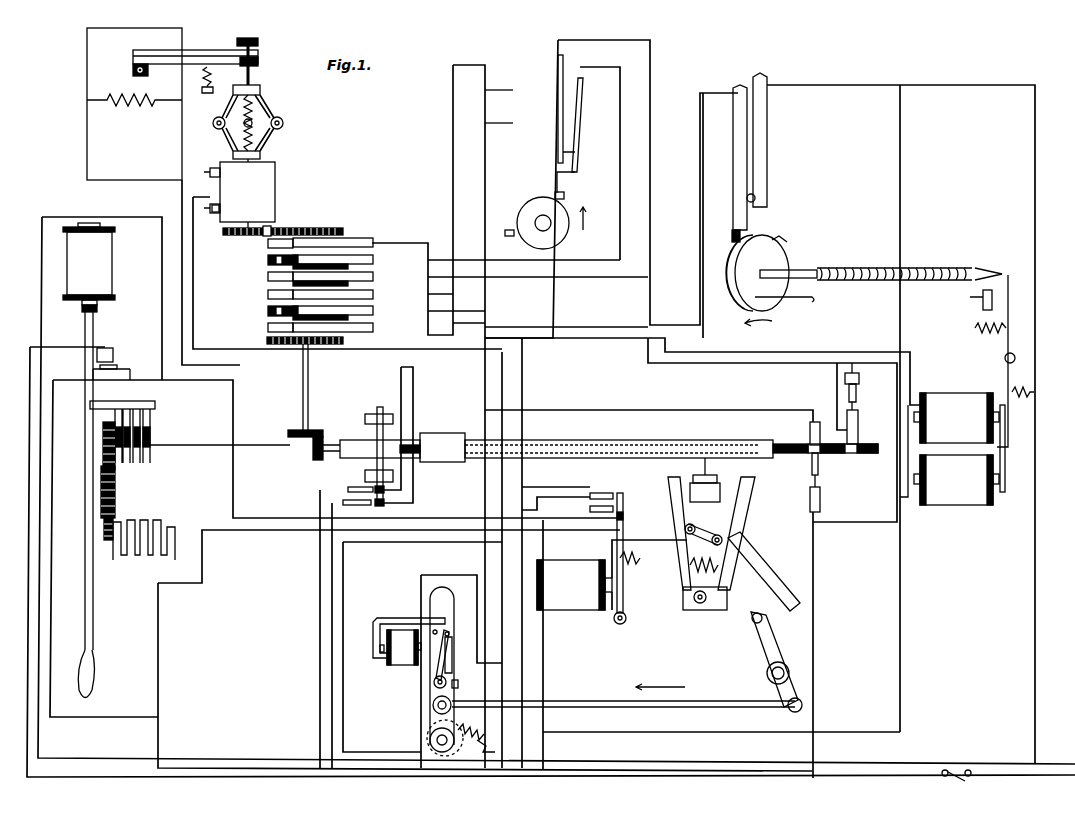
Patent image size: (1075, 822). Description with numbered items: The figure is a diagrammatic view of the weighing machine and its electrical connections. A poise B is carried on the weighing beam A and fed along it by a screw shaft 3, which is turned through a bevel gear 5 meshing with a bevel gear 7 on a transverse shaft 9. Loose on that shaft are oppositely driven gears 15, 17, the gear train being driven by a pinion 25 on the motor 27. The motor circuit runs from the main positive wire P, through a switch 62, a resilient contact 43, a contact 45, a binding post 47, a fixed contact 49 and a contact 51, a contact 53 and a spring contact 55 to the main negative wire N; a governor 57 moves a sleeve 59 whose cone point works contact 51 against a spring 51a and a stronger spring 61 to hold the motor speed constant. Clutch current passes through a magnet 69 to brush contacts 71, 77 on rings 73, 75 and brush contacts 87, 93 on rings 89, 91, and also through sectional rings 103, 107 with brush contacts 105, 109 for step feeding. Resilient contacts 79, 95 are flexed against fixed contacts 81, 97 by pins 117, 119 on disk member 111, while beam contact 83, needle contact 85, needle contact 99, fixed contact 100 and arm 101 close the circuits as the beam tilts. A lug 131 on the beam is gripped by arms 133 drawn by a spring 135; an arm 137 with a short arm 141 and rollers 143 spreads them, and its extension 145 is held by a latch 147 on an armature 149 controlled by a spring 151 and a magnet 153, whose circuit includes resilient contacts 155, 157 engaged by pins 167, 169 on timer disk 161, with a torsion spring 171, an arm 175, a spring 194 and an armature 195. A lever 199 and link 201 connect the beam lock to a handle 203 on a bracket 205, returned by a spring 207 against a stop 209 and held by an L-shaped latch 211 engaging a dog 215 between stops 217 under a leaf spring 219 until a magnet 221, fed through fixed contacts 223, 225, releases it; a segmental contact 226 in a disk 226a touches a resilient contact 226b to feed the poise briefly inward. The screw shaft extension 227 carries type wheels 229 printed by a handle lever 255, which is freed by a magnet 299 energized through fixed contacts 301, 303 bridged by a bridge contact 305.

The screw shaft 3 is at (347, 447).
The bevel gear 5 is at (327, 445).
The bevel gear 7 is at (289, 433).
The shaft 9 is at (309, 386).
The gear 15 is at (322, 228).
The gear 17 is at (344, 344).
The pinion 25 is at (212, 244).
The motor 27 is at (275, 198).
The resilient contact 43 is at (348, 489).
The contact 45 is at (375, 488).
The binding post 47 is at (210, 210).
The fixed contact 49 is at (212, 50).
The contact 51 is at (207, 63).
The spring 51a is at (209, 79).
The contact 53 is at (384, 503).
The spring contact 55 is at (343, 503).
The governor 57 is at (263, 99).
The sleeve 59 is at (281, 135).
The spring 61 is at (268, 112).
The switch 62 is at (957, 766).
The magnet 69 is at (957, 495).
The brush contact 71 is at (346, 241).
The contact ring 73 is at (268, 245).
The contact ring 75 is at (268, 279).
The brush contact 77 is at (373, 278).
The contact 79 is at (585, 94).
The fixed contact 81 is at (563, 118).
The contact 83 is at (858, 432).
The needle contact 85 is at (859, 393).
The brush contact 87 is at (373, 330).
The contact ring 89 is at (268, 330).
The ring 91 is at (268, 296).
The brush contact 93 is at (373, 296).
The resilient contact 95 is at (485, 123).
The fixed contact 97 is at (485, 91).
The needle contact 99 is at (818, 470).
The fixed contact 100 is at (826, 478).
The arm 101 is at (820, 498).
The sectional contact ring 103 is at (268, 262).
The brush contact 105 is at (373, 261).
The sectional ring 107 is at (268, 313).
The brush contact 109 is at (373, 313).
The disk member 111 is at (570, 225).
The pin 117 is at (565, 197).
The pin 119 is at (509, 228).
The lug 131 is at (700, 470).
The arms 133 is at (755, 487).
The spring 135 is at (683, 597).
The arm 137 is at (766, 572).
The short arm 141 is at (722, 522).
The rollers 143 is at (700, 540).
The extension 145 is at (620, 550).
The latch 147 is at (620, 550).
The armature 149 is at (625, 607).
The spring 151 is at (692, 565).
The magnet 153 is at (576, 605).
The resilient contact 155 is at (745, 131).
The resilient contact 157 is at (767, 151).
The disk member 161 is at (732, 306).
The pin 167 is at (735, 238).
The pin 169 is at (787, 243).
The helical torsion spring 171 is at (968, 266).
The arm 175 is at (1008, 320).
The spring 194 is at (1012, 392).
The armature 195 is at (1003, 495).
The lever 199 is at (762, 640).
The link 201 is at (714, 702).
The handle 203 is at (443, 592).
The bracket 205 is at (437, 755).
The spring 207 is at (470, 732).
The stop 209 is at (458, 683).
The L-shaped latch 211 is at (406, 618).
The dog 215 is at (437, 652).
The stops 217 is at (449, 635).
The leaf spring 219 is at (450, 648).
The magnet 221 is at (393, 660).
The fixed contact 223 is at (116, 366).
The fixed contact 225 is at (102, 352).
The segmental contact 226 is at (449, 753).
The disk 226a is at (430, 740).
The resilient contact 226b is at (468, 748).
The extension 227 is at (192, 441).
The wheels 229 is at (135, 462).
The handle lever 255 is at (93, 587).
The magnet 299 is at (100, 274).
The fixed contact 301 is at (592, 507).
The fixed contact 303 is at (604, 493).
The bridge contact 305 is at (622, 493).
The weighing beam A is at (625, 440).
The poise B is at (442, 447).
The main negative wire N is at (1053, 755).
The main positive wire P is at (1052, 785).